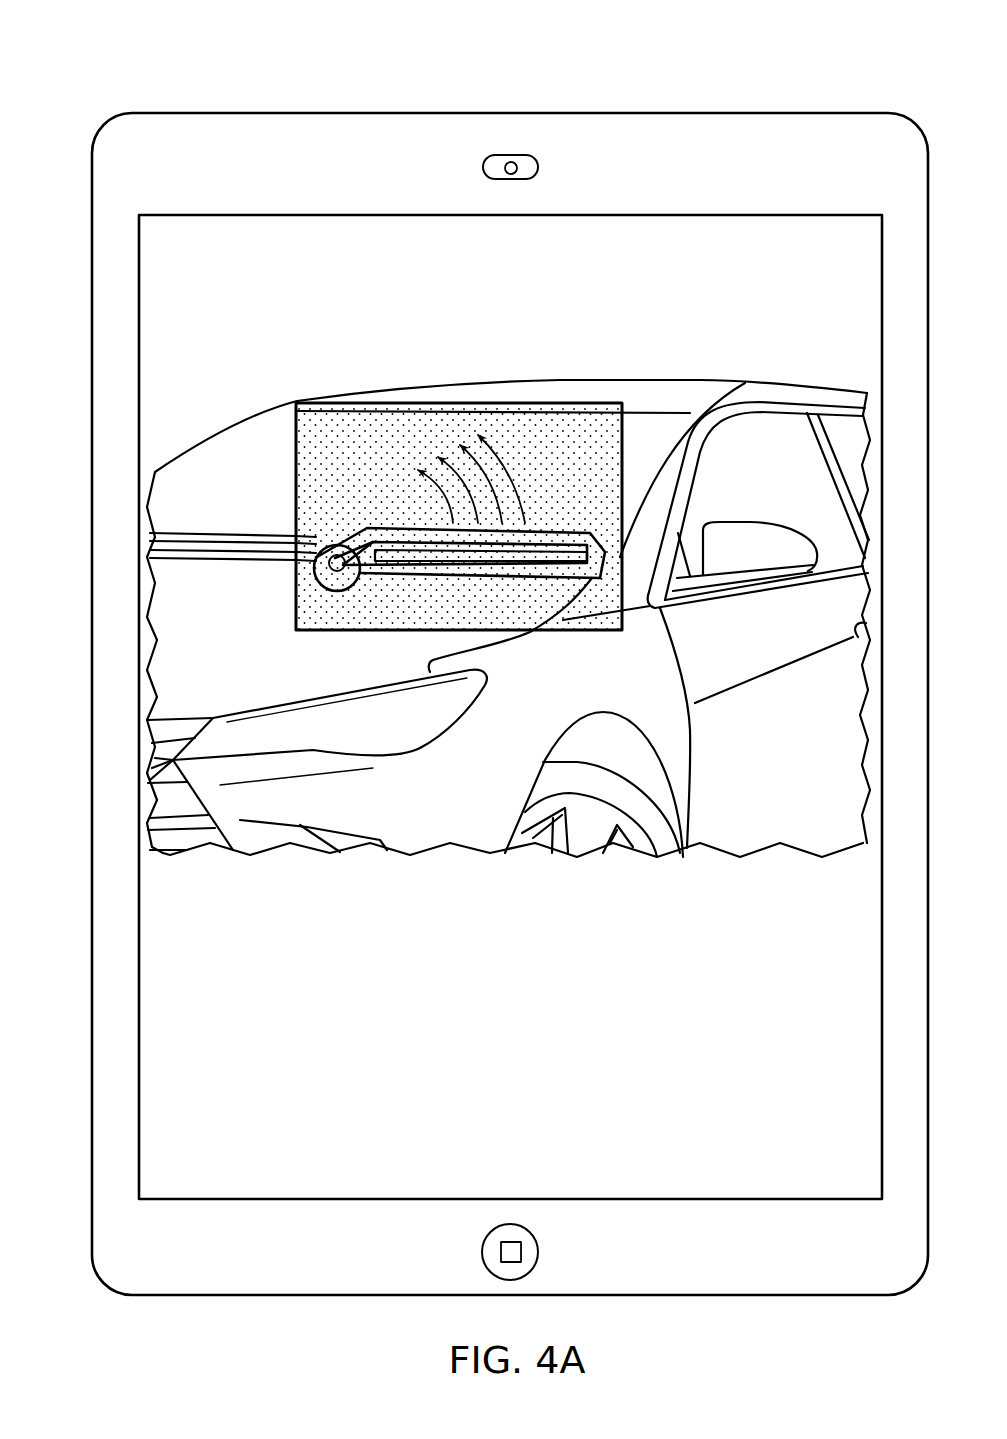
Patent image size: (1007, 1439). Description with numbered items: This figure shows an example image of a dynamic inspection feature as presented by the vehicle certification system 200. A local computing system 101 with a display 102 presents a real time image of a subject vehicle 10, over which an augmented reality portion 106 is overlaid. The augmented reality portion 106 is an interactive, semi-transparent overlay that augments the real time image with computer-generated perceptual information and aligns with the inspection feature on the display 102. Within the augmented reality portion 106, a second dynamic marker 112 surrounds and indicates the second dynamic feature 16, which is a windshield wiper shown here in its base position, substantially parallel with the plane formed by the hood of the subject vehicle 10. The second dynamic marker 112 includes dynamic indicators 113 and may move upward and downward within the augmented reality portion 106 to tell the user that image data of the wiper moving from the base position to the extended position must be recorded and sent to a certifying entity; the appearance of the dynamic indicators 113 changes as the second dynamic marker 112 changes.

The vehicle certification system 200 is at (112, 82).
The local computing system 101 is at (174, 82).
The display 102 is at (182, 213).
The subject vehicle 10 is at (528, 380).
The augmented reality portion 106 is at (296, 612).
The second dynamic marker 112 is at (397, 523).
The second dynamic feature 16 is at (550, 550).
The dynamic indicators 113 is at (510, 477).